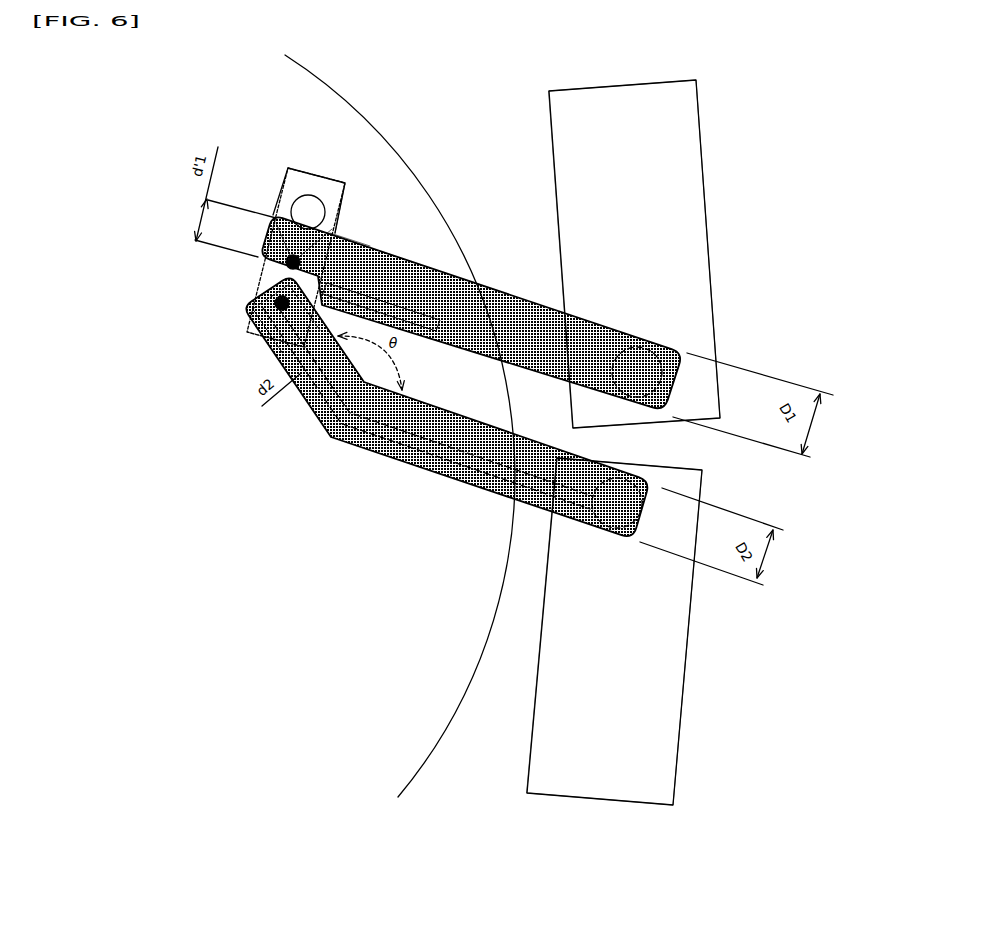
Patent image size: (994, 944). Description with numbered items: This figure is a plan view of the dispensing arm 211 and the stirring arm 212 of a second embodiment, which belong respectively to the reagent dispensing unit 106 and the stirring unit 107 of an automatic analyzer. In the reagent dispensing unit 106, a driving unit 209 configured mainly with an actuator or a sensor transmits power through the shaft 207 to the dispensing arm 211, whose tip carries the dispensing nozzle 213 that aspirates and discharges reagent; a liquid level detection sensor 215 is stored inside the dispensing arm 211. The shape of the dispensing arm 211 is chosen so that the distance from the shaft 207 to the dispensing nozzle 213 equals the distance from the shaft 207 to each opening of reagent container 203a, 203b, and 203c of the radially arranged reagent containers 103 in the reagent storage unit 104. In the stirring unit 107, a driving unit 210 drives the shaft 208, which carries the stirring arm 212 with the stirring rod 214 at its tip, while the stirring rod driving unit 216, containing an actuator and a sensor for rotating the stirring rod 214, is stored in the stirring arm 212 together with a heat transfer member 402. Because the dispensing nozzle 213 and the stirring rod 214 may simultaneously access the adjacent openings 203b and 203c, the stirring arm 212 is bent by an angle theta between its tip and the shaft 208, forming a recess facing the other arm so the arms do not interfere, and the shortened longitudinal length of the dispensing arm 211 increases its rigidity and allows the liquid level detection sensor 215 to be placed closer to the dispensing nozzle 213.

The reagent container 103 is at (318, 170).
The reagent storage unit 104 is at (368, 125).
The reagent dispensing unit 106 is at (540, 142).
The stirring unit 107 is at (705, 658).
The opening of reagent container 203a is at (325, 208).
The opening of reagent container 203b is at (348, 243).
The opening of reagent container 203c is at (250, 313).
The shaft 207 is at (663, 370).
The shaft 208 is at (577, 520).
The driving unit 209 is at (700, 128).
The driving unit 210 is at (527, 757).
The dispensing arm 211 is at (508, 262).
The stirring arm 212 is at (380, 405).
The dispensing nozzle 213 is at (274, 212).
The stirring rod 214 is at (257, 293).
The liquid level detection sensor 215 is at (398, 298).
The stirring rod driving unit 216 is at (253, 333).
The heat transfer member 402 is at (472, 458).